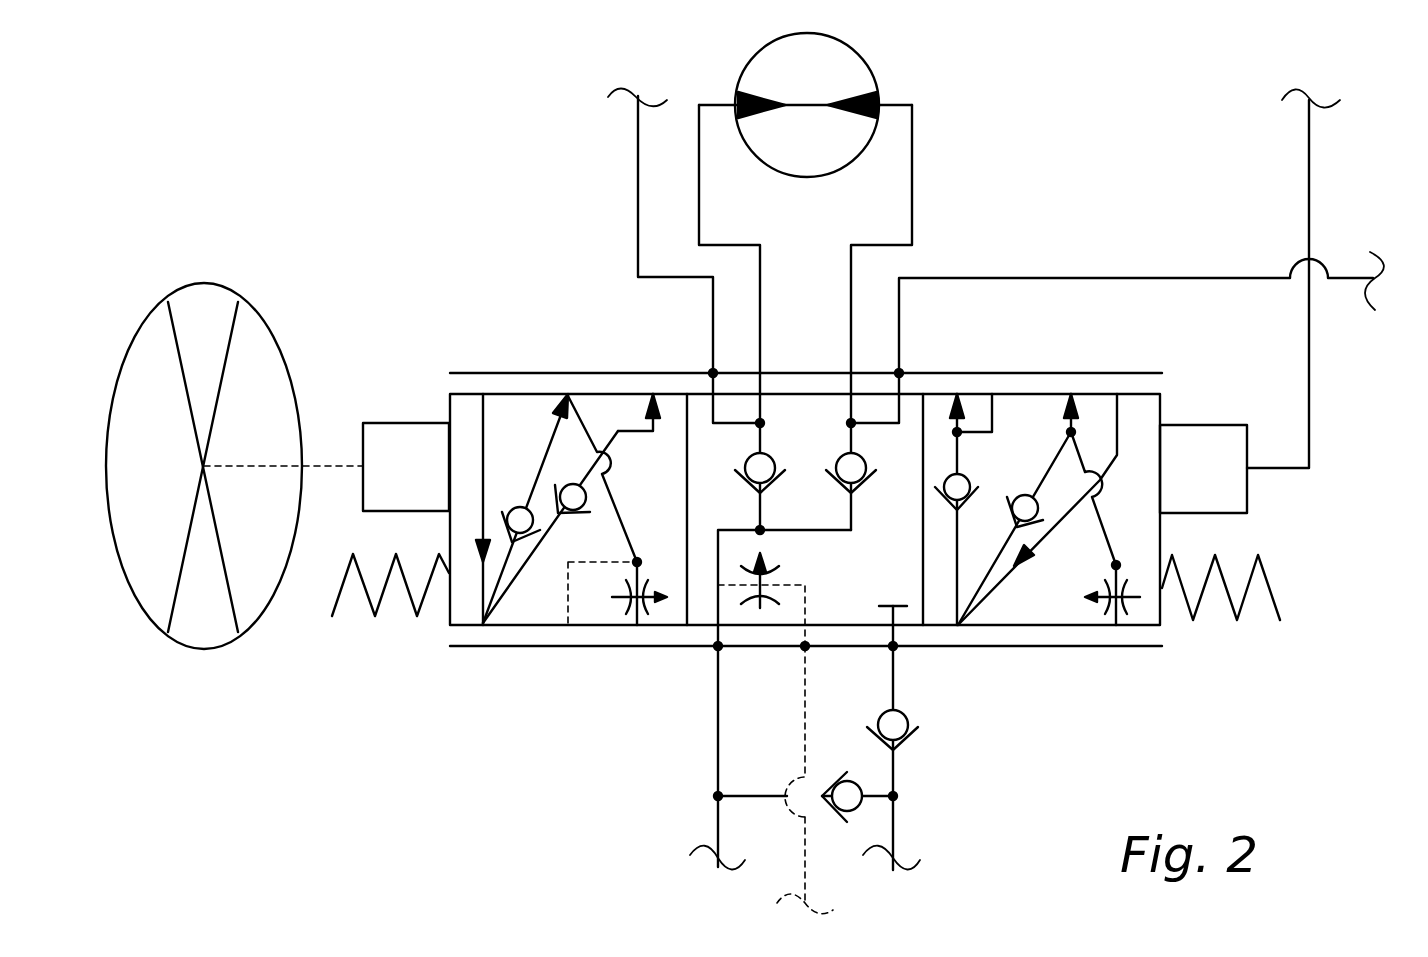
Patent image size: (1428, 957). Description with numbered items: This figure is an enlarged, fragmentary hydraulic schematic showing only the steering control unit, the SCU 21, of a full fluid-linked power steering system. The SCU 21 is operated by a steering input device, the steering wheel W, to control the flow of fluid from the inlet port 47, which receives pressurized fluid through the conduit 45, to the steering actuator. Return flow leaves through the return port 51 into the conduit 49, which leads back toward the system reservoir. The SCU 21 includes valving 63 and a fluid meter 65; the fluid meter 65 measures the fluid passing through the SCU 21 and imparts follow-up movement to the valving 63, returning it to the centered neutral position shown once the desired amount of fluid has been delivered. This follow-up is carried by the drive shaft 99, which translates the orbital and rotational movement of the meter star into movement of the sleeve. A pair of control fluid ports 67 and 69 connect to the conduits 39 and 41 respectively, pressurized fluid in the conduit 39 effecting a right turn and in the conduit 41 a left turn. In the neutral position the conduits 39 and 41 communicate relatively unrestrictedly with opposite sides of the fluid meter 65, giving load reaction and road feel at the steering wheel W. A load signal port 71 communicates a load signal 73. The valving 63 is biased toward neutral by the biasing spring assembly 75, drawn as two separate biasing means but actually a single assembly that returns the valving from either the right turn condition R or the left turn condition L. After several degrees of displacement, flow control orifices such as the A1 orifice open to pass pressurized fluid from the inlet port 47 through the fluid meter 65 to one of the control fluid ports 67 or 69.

The steering wheel W is at (273, 343).
The steering control unit (SCU) 21 is at (522, 328).
The valving 63 is at (1013, 362).
The conduit 41 is at (637, 192).
The conduit 39 is at (1133, 278).
The drive shaft 99 is at (1310, 193).
The fluid meter 65 is at (867, 65).
The control fluid port 69 is at (713, 373).
The control fluid port 67 is at (899, 373).
The left turn condition L is at (406, 451).
The right turn condition R is at (1203, 453).
The flow control orifice A1 is at (657, 556).
The biasing spring assembly 75 is at (363, 593).
The return port 51 is at (718, 646).
The load signal port 71 is at (804, 646).
The inlet port 47 is at (893, 646).
The conduit 49 is at (718, 825).
The conduit 45 is at (893, 832).
The load signal 73 is at (808, 858).